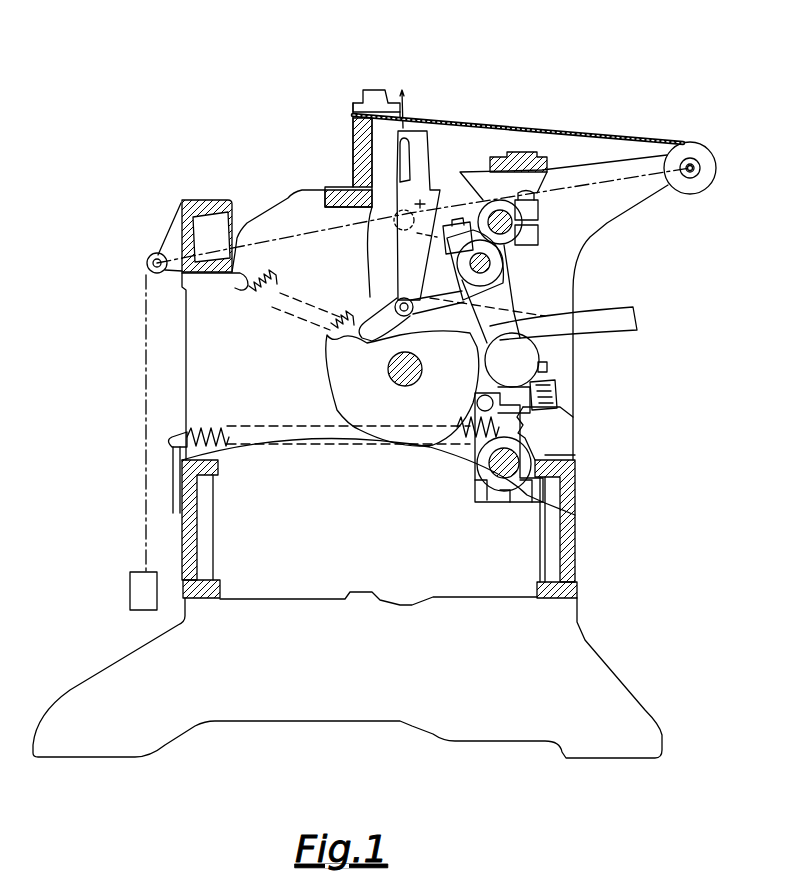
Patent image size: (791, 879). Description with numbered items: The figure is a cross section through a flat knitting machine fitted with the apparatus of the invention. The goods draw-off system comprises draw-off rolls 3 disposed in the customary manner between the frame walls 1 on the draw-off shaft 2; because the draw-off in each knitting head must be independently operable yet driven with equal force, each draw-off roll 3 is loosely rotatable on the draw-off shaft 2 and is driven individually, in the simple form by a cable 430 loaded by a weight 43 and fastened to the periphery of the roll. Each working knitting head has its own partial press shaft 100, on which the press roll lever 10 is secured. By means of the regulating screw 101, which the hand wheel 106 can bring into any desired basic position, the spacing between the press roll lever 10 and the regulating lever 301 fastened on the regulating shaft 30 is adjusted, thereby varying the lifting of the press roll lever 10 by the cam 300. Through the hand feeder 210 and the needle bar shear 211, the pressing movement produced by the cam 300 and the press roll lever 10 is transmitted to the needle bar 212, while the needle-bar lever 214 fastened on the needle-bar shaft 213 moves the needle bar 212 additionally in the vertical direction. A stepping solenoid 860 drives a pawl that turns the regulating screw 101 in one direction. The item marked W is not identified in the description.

The frame wall 1 is at (567, 442).
The draw-off shaft 2 is at (689, 172).
The draw-off roll 3 is at (684, 146).
The thread / workpiece W is at (537, 128).
The press roll lever 10 is at (503, 290).
The regulating shaft 30 is at (578, 518).
The weight 43 is at (143, 586).
The partial press shaft 100 is at (503, 260).
The regulating screw 101 is at (555, 390).
The hand wheel 106 is at (560, 407).
The hand feeder 210 is at (622, 320).
The needle bar shear 211 is at (405, 283).
The needle bar 212 is at (417, 157).
The needle-bar shaft 213 is at (455, 197).
The needle-bar lever 214 is at (448, 222).
The cam 300 is at (352, 385).
The regulating lever 301 is at (490, 449).
The cable 430 is at (146, 320).
The stepping solenoid 860 is at (545, 366).